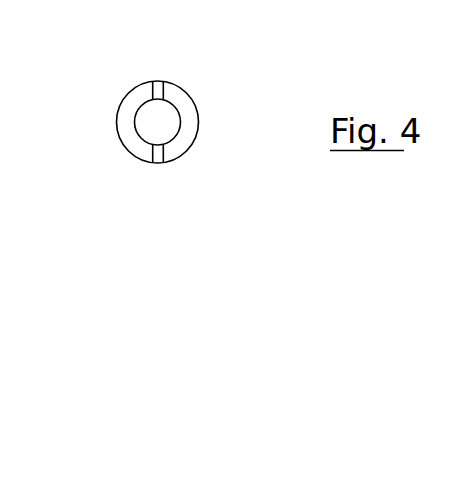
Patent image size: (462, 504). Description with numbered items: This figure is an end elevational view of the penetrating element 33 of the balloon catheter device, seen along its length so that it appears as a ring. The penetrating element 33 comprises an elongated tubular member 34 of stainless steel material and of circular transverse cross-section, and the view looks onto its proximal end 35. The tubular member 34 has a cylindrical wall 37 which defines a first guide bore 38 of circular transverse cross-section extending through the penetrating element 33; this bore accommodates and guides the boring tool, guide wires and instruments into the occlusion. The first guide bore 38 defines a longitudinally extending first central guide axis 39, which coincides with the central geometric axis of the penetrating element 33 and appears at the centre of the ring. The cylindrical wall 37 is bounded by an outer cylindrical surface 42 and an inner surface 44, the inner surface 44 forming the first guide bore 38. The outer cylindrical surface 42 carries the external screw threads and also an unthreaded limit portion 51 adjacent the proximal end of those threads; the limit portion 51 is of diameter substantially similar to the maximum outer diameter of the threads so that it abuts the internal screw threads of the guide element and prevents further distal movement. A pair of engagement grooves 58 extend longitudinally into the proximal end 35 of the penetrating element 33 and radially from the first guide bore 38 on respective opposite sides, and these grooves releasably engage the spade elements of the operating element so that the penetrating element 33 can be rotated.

The penetrating element 33 is at (195, 115).
The elongated tubular member 34 is at (191, 127).
The proximal end 35 is at (127, 133).
The cylindrical wall 37 is at (132, 96).
The first guide bore 38 is at (152, 133).
The first central guide axis 39 is at (160, 120).
The outer cylindrical surface 42 is at (180, 152).
The inner surface 44 is at (147, 108).
The unthreaded limit portion 51 is at (118, 113).
The engagement grooves 58 is at (158, 82).